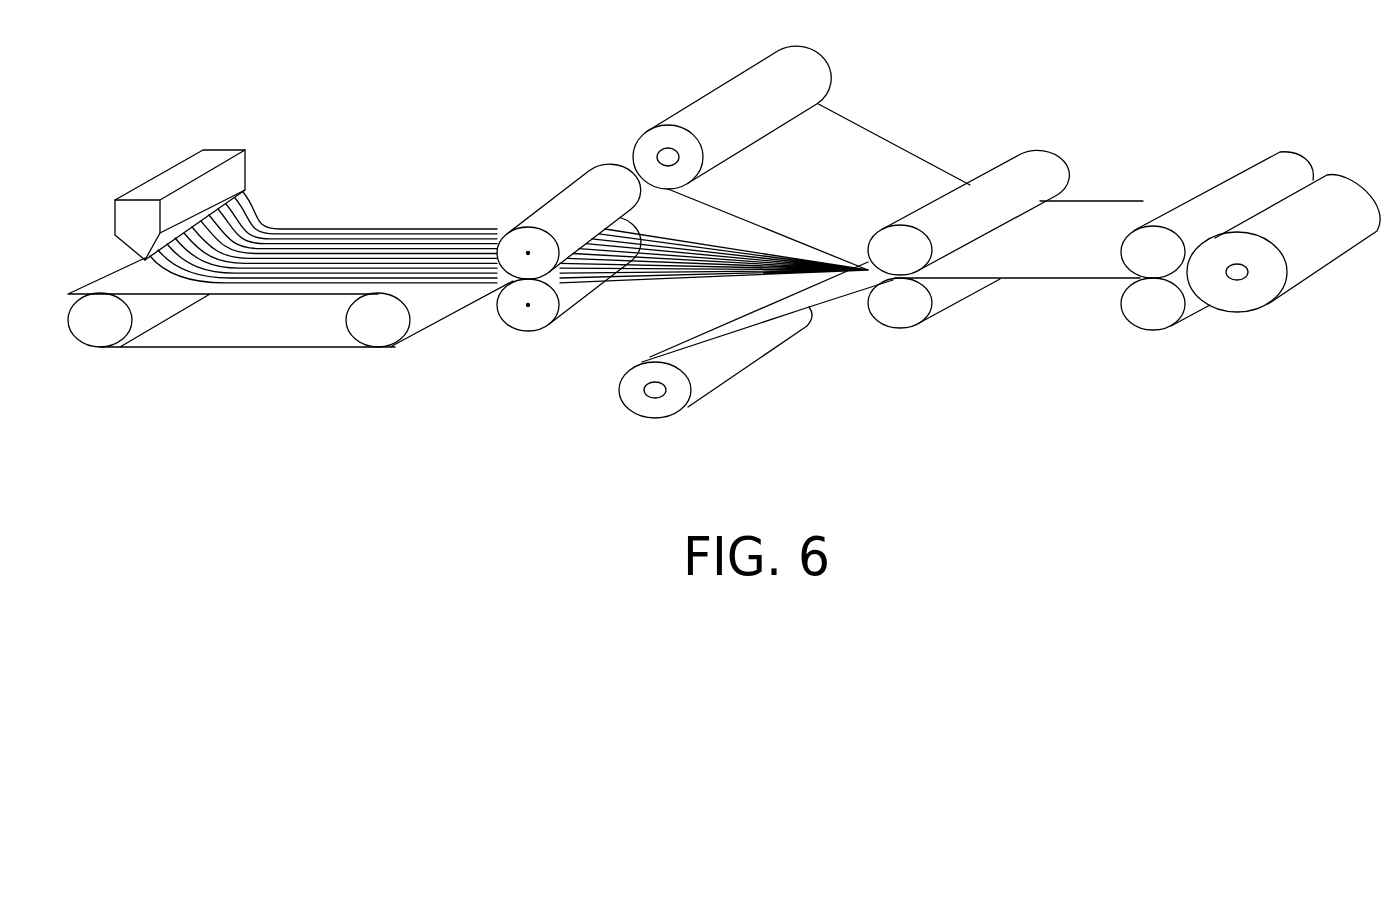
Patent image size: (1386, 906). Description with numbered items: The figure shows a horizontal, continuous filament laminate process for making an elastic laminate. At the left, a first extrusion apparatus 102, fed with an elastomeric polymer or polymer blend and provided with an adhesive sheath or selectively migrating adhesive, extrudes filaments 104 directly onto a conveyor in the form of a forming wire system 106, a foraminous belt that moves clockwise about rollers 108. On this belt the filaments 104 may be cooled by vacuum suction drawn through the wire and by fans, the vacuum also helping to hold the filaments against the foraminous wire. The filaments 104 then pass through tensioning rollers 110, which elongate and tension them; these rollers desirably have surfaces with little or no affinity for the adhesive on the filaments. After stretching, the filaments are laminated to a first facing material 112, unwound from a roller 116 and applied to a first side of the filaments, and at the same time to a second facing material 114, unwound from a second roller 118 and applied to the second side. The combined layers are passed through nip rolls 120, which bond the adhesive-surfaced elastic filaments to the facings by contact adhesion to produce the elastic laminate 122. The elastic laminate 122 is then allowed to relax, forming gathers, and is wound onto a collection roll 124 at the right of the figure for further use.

The first extrusion apparatus 102 is at (150, 185).
The filaments 104 is at (238, 197).
The forming wire system 106 is at (208, 300).
The rollers 108 is at (97, 333).
The tensioning rollers 110 is at (560, 208).
The first facing material 112 is at (867, 150).
The second facing material 114 is at (820, 290).
The roller 116 is at (710, 123).
The second roller 118 is at (672, 398).
The nip rolls 120 is at (1042, 168).
The elastic laminate 122 is at (1057, 280).
The collection roll 124 is at (1342, 200).